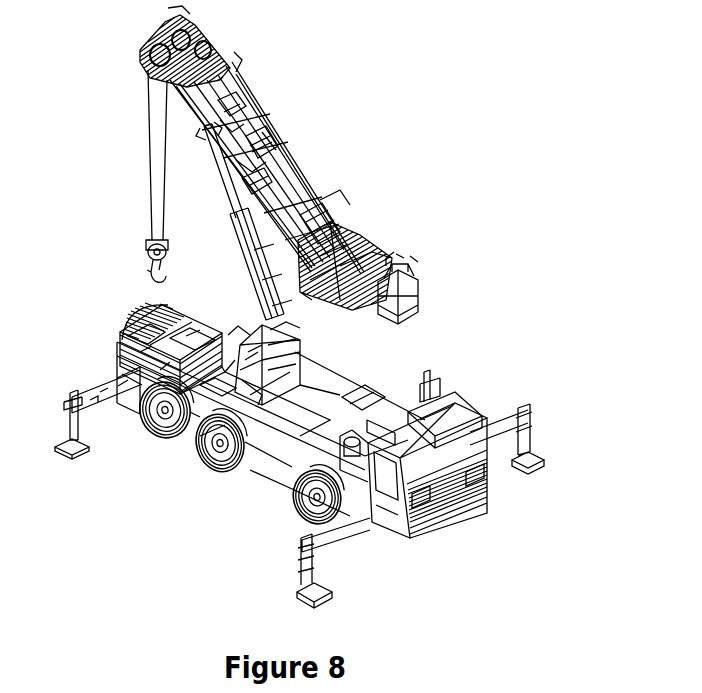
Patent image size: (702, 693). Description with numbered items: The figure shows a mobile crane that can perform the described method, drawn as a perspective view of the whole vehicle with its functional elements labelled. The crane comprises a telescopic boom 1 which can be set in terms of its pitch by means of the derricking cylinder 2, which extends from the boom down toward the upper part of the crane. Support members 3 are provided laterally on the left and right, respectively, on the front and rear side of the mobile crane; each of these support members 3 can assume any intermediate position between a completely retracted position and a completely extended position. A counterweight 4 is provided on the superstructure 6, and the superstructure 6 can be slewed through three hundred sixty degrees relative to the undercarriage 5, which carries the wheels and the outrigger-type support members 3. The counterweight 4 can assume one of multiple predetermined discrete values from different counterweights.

The telescopic boom 1 is at (266, 158).
The derricking cylinder 2 is at (244, 221).
The support members 3 is at (308, 489).
The counterweight 4 is at (410, 290).
The undercarriage 5 is at (302, 440).
The superstructure 6 is at (230, 369).